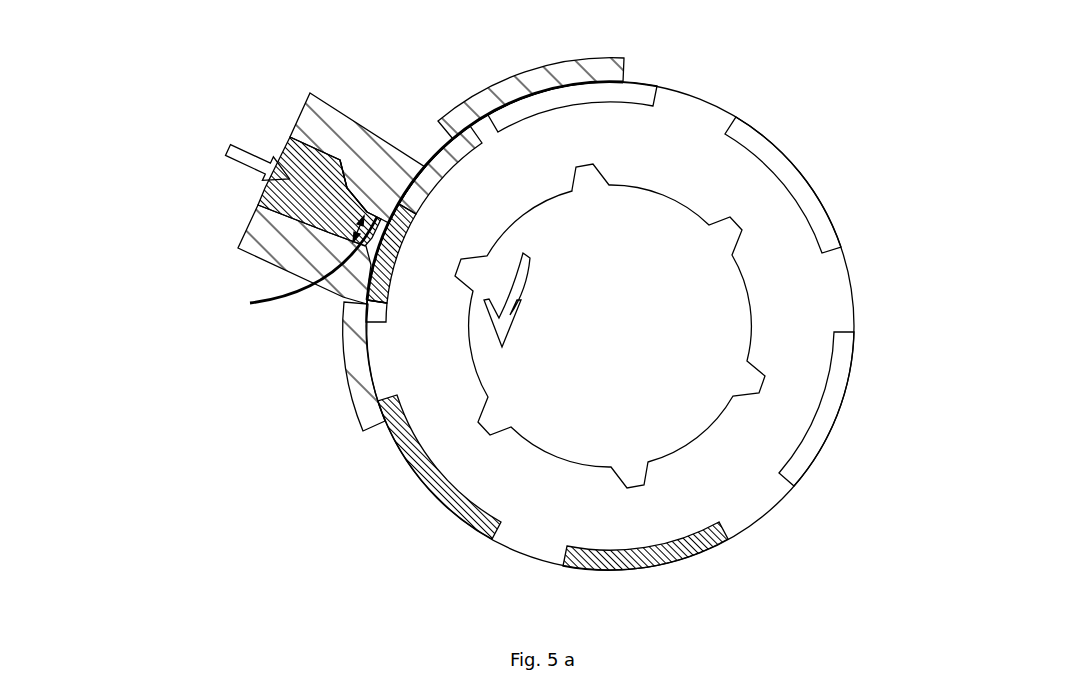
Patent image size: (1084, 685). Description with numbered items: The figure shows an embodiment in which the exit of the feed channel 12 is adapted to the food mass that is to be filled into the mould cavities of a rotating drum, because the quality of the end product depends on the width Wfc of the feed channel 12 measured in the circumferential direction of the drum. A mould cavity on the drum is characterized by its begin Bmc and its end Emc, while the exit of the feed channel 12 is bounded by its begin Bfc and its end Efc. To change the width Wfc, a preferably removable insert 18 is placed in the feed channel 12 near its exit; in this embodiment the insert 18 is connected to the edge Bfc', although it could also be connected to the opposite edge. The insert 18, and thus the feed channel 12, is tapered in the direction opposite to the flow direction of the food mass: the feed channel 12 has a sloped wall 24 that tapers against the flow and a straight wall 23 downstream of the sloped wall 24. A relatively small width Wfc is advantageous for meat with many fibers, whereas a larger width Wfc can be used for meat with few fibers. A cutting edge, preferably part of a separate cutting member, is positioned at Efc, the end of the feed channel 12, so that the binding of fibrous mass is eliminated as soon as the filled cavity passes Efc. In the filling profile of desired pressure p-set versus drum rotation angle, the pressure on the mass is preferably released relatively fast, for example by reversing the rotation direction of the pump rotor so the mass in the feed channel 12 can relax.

The feed channel 12 is at (287, 133).
The sloped wall 24 is at (348, 188).
The insert 18 is at (373, 193).
The straight wall 23 is at (297, 268).
The begin feed channel Bfc is at (435, 110).
The edge of feed channel with insert Bfc' is at (495, 153).
The end mould cavity Emc is at (434, 134).
The begin mould cavity Bmc is at (365, 336).
The width of the feed channel Wfc is at (360, 224).
The end feed channel Efc is at (375, 270).
The desired pressure p-set is at (546, 461).